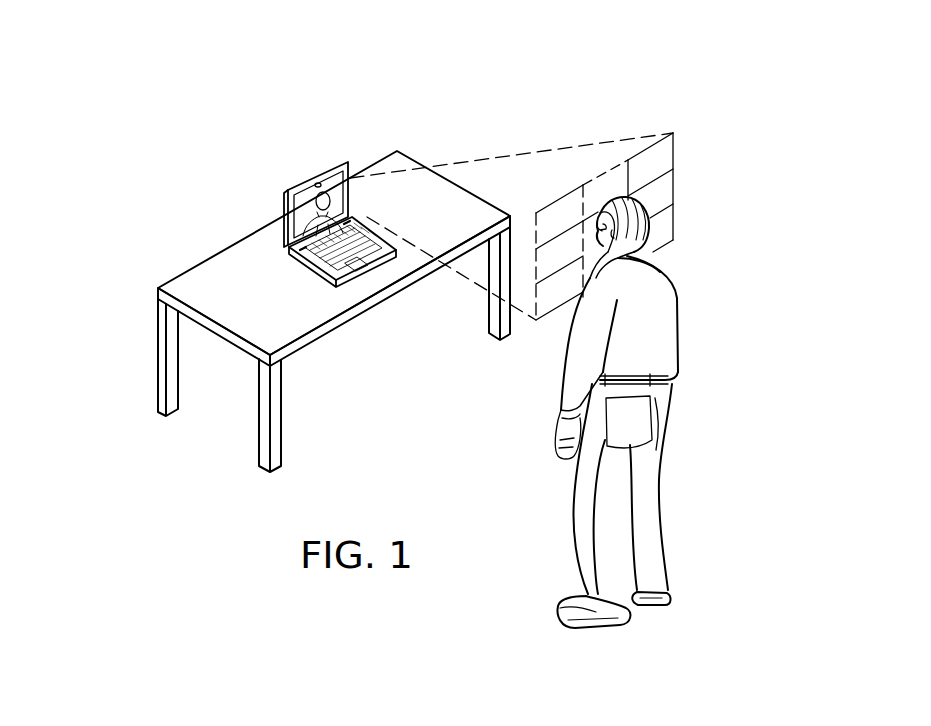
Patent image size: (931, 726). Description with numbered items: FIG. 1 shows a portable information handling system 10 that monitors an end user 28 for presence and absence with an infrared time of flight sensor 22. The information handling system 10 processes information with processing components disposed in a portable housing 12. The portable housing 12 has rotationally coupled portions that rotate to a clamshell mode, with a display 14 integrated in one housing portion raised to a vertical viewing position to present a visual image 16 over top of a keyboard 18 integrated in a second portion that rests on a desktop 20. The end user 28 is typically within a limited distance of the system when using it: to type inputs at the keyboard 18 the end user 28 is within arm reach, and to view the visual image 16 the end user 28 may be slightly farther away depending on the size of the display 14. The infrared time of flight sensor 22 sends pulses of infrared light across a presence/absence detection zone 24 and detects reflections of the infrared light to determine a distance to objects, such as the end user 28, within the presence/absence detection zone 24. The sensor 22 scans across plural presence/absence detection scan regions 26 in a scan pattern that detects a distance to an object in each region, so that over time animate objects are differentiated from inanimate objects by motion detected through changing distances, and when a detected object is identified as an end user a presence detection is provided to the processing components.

The portable information handling system 10 is at (250, 238).
The portable housing 12 is at (336, 238).
The display 14 is at (334, 129).
The visual image 16 is at (302, 209).
The keyboard 18 is at (343, 264).
The desktop 20 is at (176, 290).
The infrared time of flight sensor 22 is at (339, 99).
The presence/absence detection zone 24 is at (610, 228).
The presence/absence detection scan regions 26 is at (753, 262).
The end user 28 is at (662, 466).